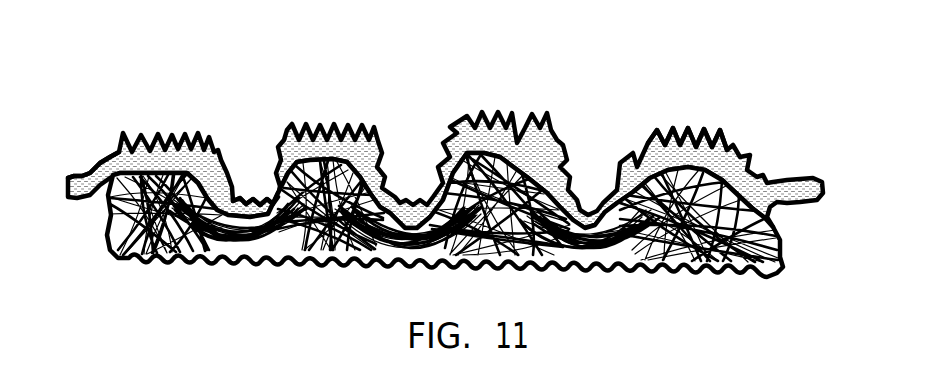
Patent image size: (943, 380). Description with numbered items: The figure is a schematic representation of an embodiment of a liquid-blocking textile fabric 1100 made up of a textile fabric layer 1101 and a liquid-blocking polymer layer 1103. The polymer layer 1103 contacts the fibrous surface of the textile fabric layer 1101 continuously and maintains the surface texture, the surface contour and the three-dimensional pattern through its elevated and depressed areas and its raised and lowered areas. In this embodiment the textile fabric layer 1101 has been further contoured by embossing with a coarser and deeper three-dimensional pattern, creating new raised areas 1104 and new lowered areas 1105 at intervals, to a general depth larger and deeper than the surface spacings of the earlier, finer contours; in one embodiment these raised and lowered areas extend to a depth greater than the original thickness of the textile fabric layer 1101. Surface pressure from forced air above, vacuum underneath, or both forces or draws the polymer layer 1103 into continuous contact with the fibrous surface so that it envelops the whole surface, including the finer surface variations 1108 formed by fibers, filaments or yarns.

The liquid-blocking textile fabric 1100 is at (148, 64).
The textile fabric layer 1101 is at (111, 218).
The liquid-blocking polymer layer 1103 is at (80, 182).
The raised areas 1104 is at (513, 143).
The lowered areas 1105 is at (248, 193).
The peaks 1108 is at (722, 138).